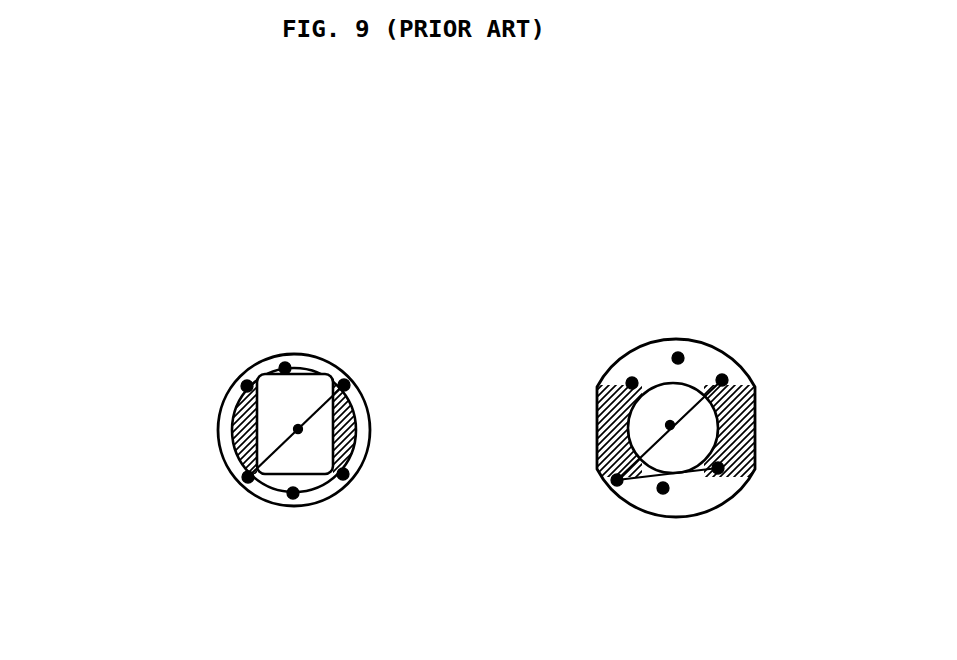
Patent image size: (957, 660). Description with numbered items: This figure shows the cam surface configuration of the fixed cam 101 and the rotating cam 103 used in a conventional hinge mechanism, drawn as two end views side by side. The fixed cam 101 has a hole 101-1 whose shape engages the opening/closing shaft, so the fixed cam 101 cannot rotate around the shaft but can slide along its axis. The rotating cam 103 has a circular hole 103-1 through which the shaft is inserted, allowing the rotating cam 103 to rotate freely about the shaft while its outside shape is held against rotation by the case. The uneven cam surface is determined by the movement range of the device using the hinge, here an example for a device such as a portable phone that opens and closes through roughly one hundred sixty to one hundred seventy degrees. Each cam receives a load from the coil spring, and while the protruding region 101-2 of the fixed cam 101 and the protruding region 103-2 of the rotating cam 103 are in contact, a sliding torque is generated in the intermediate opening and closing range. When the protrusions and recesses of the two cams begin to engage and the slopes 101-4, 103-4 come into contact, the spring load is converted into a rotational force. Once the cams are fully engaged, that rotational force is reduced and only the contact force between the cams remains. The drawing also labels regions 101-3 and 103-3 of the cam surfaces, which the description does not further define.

The fixed cam 101 is at (226, 410).
The hole of fixed cam 101-1 is at (297, 428).
The protruding region of fixed cam 101-2 is at (283, 503).
The positioning holes of connector 101 101-3 is at (293, 493).
The slope of fixed cam 101-4 is at (293, 493).
The rotating cam 103 is at (757, 405).
The hole of rotating cam 103-1 is at (670, 425).
The protruding region of rotating cam 103-2 is at (663, 517).
The positioning holes of connector 103 103-3 is at (663, 488).
The slope of rotating cam 103-4 is at (663, 488).